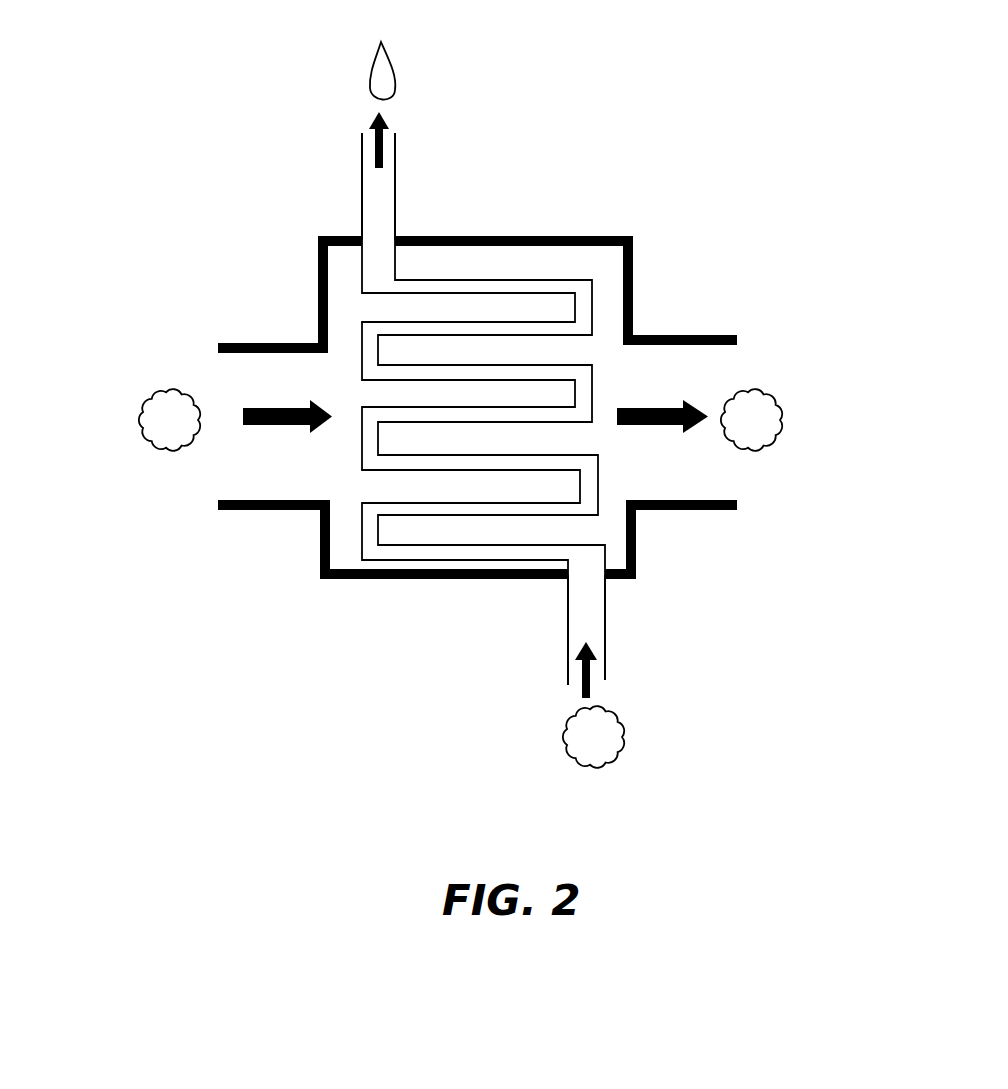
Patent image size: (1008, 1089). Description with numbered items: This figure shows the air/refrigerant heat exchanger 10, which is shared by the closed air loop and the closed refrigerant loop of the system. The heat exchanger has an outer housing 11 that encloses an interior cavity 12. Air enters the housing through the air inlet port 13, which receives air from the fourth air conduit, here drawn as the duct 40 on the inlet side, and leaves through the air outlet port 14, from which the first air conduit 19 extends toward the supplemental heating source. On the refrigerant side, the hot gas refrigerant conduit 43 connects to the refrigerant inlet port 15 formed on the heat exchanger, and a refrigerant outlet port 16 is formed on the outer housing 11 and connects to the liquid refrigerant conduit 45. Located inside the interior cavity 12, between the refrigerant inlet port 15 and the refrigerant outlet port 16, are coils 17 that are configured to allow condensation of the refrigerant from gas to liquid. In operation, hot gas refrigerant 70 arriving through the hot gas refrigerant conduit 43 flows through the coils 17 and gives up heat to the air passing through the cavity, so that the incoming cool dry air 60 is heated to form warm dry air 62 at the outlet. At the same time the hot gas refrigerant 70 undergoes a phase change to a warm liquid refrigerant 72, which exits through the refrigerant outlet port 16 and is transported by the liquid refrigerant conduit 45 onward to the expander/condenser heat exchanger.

The air/refrigerant heat exchanger 10 is at (292, 153).
The outer housing 11 is at (556, 218).
The interior cavity 12 is at (350, 293).
The air inlet port 13 is at (308, 375).
The air outlet port 14 is at (625, 367).
The refrigerant inlet port 15 is at (595, 572).
The refrigerant outlet port 16 is at (377, 208).
The coils 17 is at (413, 565).
The first air conduit 19 is at (702, 333).
The air inlet duct 40 is at (287, 512).
The hot gas refrigerant conduit 43 is at (567, 633).
The liquid refrigerant conduit 45 is at (393, 135).
The cool dry air 60 is at (138, 418).
The warm dry air 62 is at (785, 417).
The hot gas refrigerant 70 is at (625, 732).
The warm liquid refrigerant 72 is at (382, 70).